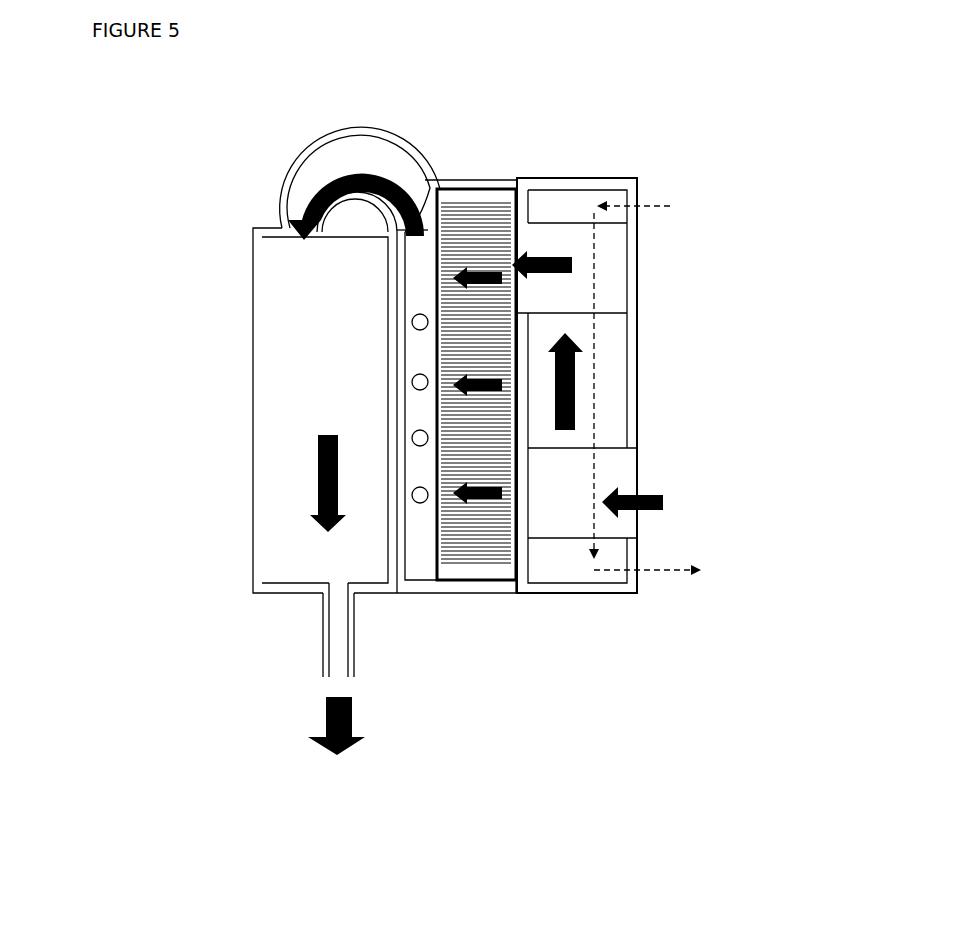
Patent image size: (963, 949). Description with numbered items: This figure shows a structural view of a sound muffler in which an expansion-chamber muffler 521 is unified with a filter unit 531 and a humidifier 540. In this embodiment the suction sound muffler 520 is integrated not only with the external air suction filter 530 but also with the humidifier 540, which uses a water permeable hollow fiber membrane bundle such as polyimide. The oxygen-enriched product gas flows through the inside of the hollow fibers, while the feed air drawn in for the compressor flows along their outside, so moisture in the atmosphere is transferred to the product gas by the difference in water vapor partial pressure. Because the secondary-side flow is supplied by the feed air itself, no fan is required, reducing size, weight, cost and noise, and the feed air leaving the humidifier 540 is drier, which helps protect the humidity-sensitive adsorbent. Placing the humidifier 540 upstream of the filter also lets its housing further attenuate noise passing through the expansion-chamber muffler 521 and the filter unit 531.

The suction sound muffler 520 is at (202, 127).
The expansion-chamber muffler 521 is at (287, 307).
The external air suction filter 530 is at (436, 192).
The filter unit 531 is at (482, 562).
The humidifier 540 is at (555, 212).